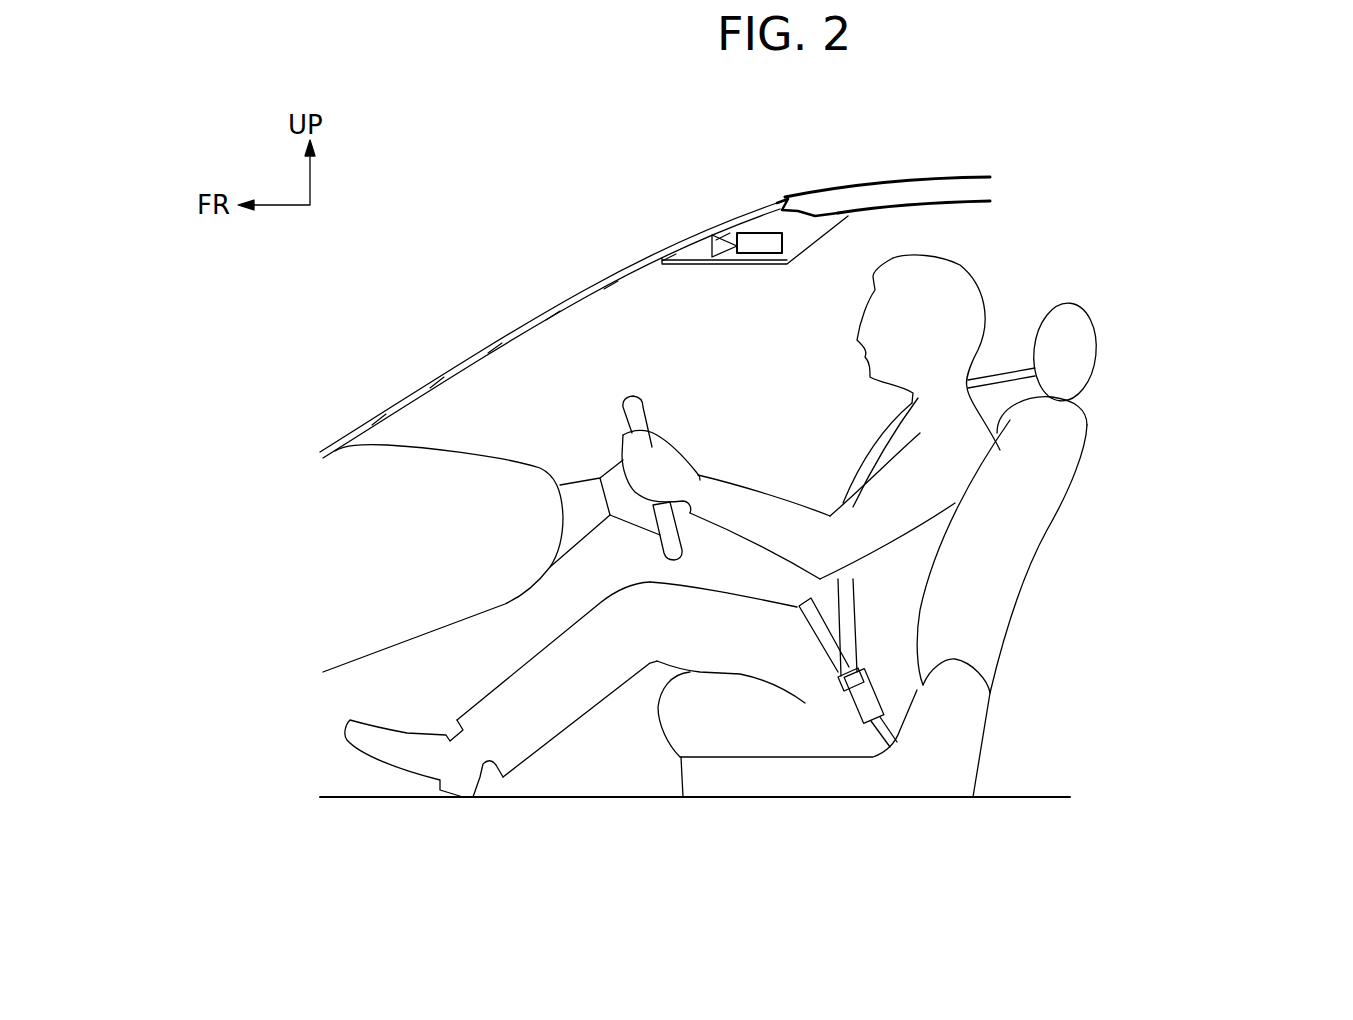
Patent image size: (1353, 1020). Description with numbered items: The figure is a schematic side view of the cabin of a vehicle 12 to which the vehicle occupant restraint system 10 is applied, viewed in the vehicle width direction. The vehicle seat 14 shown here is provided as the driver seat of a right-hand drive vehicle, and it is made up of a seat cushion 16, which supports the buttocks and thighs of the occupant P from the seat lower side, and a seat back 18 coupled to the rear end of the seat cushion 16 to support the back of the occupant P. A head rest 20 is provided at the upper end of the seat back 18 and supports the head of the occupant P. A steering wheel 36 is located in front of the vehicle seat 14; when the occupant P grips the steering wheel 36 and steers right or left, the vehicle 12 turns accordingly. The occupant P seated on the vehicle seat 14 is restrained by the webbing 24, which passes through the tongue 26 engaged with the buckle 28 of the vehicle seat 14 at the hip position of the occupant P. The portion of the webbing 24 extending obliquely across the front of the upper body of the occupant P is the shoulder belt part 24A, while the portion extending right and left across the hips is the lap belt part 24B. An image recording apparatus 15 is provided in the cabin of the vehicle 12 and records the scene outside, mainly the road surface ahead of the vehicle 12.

The vehicle occupant restraint system 10 is at (550, 306).
The vehicle 12 is at (614, 259).
The vehicle seat 14 is at (1064, 545).
The image recording apparatus 15 is at (760, 240).
The seat cushion 16 is at (658, 708).
The seat back 18 is at (1088, 449).
The head rest 20 is at (1095, 325).
The webbing 24 is at (882, 560).
The shoulder belt part 24A is at (868, 447).
The lap belt part 24B is at (813, 633).
The tongue 26 is at (862, 667).
The buckle 28 is at (857, 707).
The steering wheel 36 is at (632, 396).
The occupant P is at (975, 273).